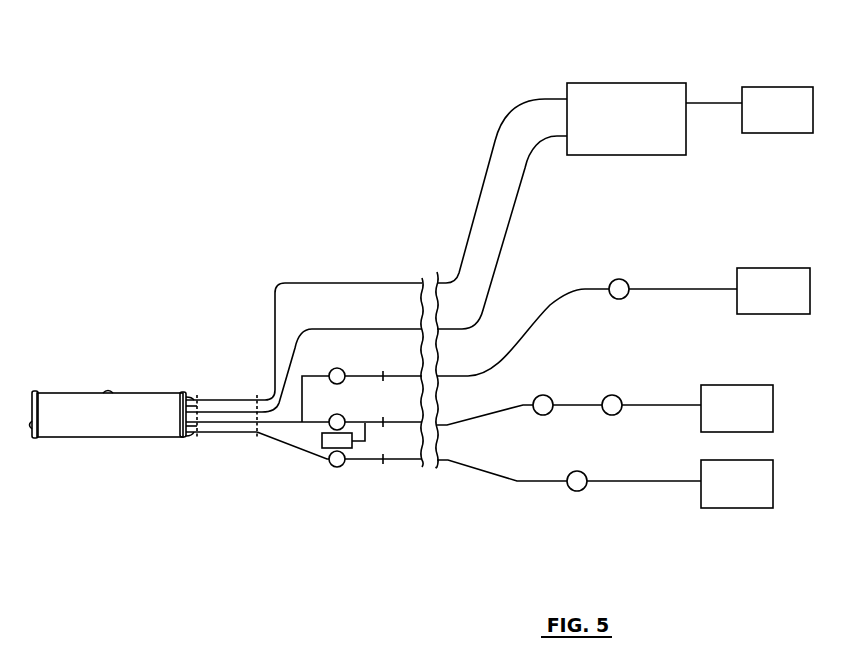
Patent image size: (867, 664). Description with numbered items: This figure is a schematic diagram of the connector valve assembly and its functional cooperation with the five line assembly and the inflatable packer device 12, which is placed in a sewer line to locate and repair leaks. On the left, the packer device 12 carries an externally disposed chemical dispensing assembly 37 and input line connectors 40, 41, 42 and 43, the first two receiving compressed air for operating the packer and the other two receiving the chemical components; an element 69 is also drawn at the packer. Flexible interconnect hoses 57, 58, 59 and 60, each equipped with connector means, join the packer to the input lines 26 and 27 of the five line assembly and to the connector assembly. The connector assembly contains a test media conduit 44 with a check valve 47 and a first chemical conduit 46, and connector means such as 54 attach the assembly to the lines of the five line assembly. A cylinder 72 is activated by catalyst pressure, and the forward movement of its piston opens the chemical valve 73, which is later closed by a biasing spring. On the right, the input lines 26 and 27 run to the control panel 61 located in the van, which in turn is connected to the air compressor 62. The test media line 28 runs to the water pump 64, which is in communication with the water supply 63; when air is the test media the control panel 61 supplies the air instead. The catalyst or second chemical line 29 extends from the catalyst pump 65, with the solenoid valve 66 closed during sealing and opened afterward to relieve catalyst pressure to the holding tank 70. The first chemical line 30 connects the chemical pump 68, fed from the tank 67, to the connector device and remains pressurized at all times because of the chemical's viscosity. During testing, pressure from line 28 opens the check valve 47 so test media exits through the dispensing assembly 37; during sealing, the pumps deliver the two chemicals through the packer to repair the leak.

The inflatable packer device 12 is at (55, 386).
The chemical dispensing assembly 37 is at (108, 390).
The trigger 69 is at (31, 428).
The input line connector 41 is at (187, 409).
The input line connector 40 is at (190, 397).
The flexible interconnect hose 58 is at (258, 398).
The flexible interconnect hose 57 is at (248, 398).
The flexible interconnect hose 59 is at (215, 438).
The flexible interconnect hose 60 is at (205, 438).
The input line connector 43 is at (190, 438).
The input line connector 42 is at (197, 438).
The first chemical conduit 46 is at (281, 443).
The check valve 47 is at (342, 369).
The test media conduit 44 is at (362, 377).
The cylinder 72 is at (324, 445).
The chemical valve 73 is at (342, 467).
The connector means 54 is at (385, 461).
The input line 26 is at (478, 205).
The input line 27 is at (513, 205).
The control panel 61 is at (572, 90).
The air compressor 62 is at (748, 92).
The test media line 28 is at (530, 323).
The water pump 64 is at (612, 284).
The water supply 63 is at (745, 277).
The catalyst line 29 is at (483, 416).
The solenoid valve 66 is at (537, 398).
The catalyst pump 65 is at (618, 403).
The holding tank 70 is at (707, 420).
The first chemical line 30 is at (495, 479).
The chemical pump 68 is at (580, 491).
The supply tank 67 is at (708, 500).